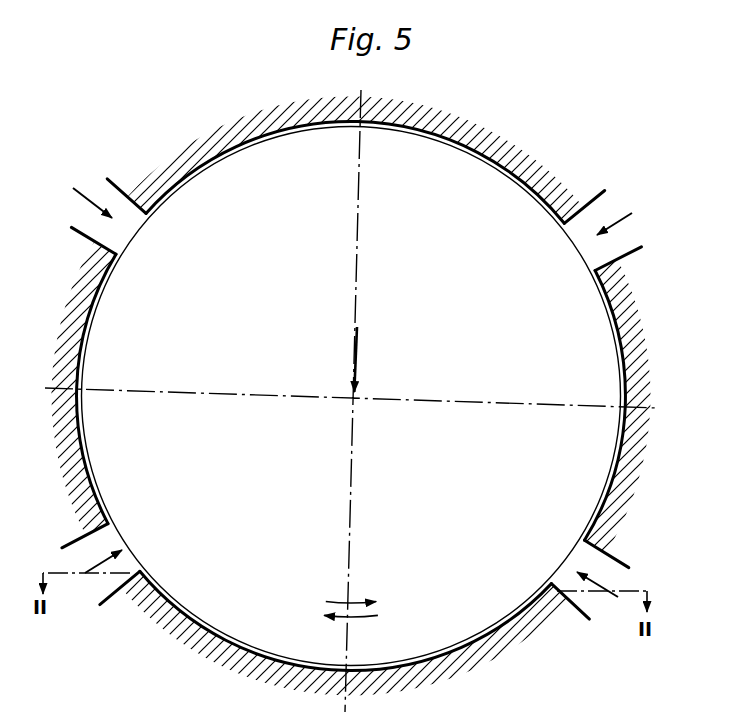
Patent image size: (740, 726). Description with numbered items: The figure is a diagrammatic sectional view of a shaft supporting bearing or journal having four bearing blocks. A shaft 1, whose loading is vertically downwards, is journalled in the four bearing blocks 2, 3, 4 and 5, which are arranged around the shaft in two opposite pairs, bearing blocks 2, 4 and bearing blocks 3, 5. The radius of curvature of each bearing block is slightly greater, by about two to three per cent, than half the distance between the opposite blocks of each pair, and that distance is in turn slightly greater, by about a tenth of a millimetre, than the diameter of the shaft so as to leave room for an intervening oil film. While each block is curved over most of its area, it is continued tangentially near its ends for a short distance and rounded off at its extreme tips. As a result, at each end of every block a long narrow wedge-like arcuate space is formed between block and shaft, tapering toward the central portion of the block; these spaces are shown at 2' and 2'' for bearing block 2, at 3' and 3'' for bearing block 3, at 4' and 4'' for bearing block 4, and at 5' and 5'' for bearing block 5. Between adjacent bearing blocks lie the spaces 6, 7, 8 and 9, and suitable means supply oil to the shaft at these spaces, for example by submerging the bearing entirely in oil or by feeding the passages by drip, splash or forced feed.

The shaft 1 is at (468, 183).
The bearing block 2 is at (345, 643).
The wedge-like arcuate space 2' is at (557, 594).
The wedge-like arcuate space 2'' is at (150, 587).
The bearing block 3 is at (81, 388).
The wedge-like arcuate space 3' is at (103, 526).
The wedge-like arcuate space 3'' is at (107, 266).
The bearing block 4 is at (355, 159).
The wedge-like arcuate space 4' is at (143, 204).
The wedge-like arcuate space 4'' is at (562, 212).
The bearing block 5 is at (623, 406).
The wedge-like arcuate space 5' is at (601, 278).
The wedge-like arcuate space 5'' is at (592, 546).
The space between bearing blocks 6 is at (117, 567).
The space between bearing blocks 7 is at (118, 215).
The space between bearing blocks 8 is at (593, 227).
The space between bearing blocks 9 is at (597, 568).